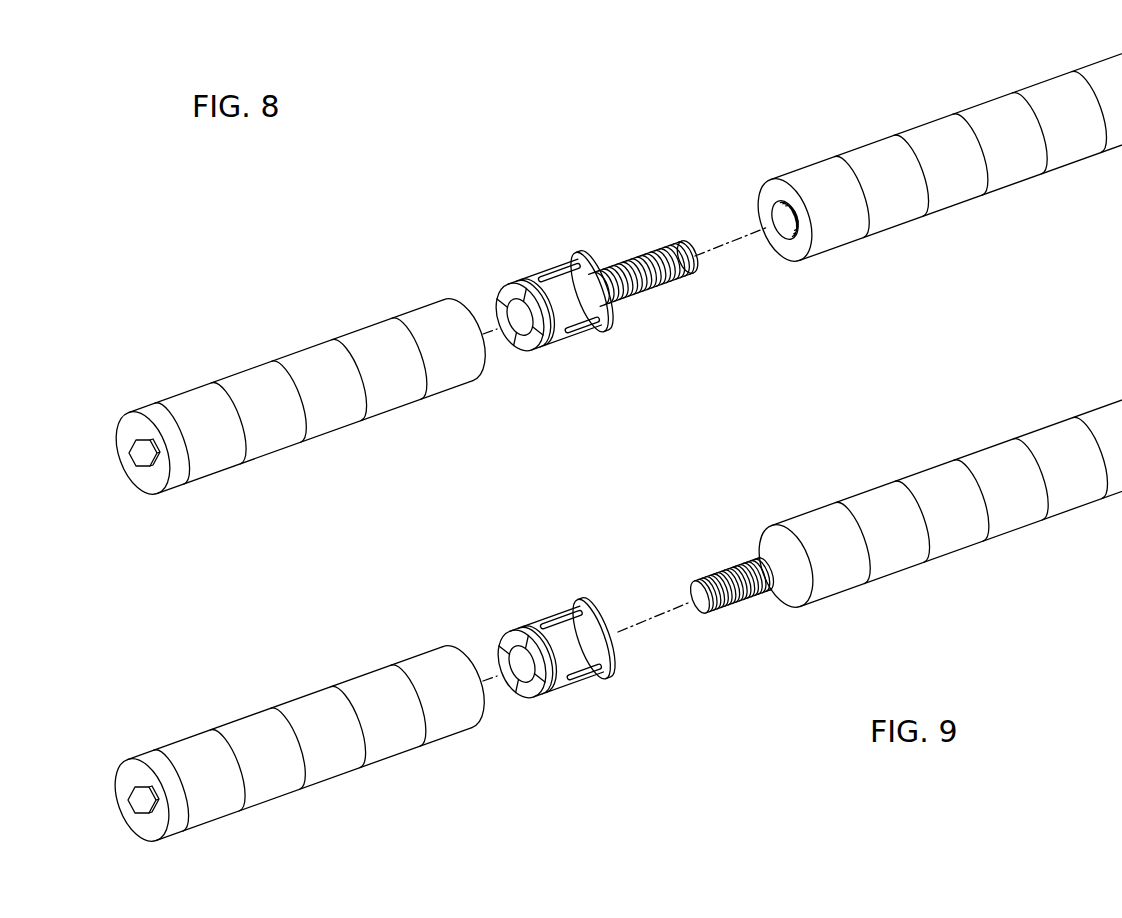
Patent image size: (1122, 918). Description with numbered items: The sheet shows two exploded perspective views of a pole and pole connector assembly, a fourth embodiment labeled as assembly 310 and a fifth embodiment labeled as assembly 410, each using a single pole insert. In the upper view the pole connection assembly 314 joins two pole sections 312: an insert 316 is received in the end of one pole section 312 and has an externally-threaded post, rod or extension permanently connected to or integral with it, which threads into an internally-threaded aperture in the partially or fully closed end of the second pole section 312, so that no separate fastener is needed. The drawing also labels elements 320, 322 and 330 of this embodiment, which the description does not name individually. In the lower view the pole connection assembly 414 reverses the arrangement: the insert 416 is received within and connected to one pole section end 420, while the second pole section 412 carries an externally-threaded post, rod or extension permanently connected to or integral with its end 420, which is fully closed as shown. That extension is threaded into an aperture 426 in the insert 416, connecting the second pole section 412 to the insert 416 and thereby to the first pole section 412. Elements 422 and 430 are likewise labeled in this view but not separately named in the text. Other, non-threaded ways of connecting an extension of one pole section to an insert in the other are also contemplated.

In FIG. 8, the rod assembly 310 is at (326, 280).
In FIG. 8, the second pole section 312 is at (337, 414).
In FIG. 8, the connector 314 is at (670, 312).
In FIG. 8, the insert 316 is at (575, 275).
In FIG. 8, the rod end 320 is at (472, 368).
In FIG. 8, the grooves 322 is at (969, 120).
In FIG. 8, the collet nut 330 is at (560, 292).
In FIG. 9, the rod assembly 410 is at (326, 635).
In FIG. 9, the pole section 412 is at (323, 763).
In FIG. 9, the pole connection assembly 414 is at (650, 664).
In FIG. 9, the insert 416 is at (575, 622).
In FIG. 9, the pole section end 420 is at (472, 715).
In FIG. 9, the grooves 422 is at (969, 468).
In FIG. 9, the aperture 426 is at (610, 618).
In FIG. 9, the collet nut 430 is at (560, 640).